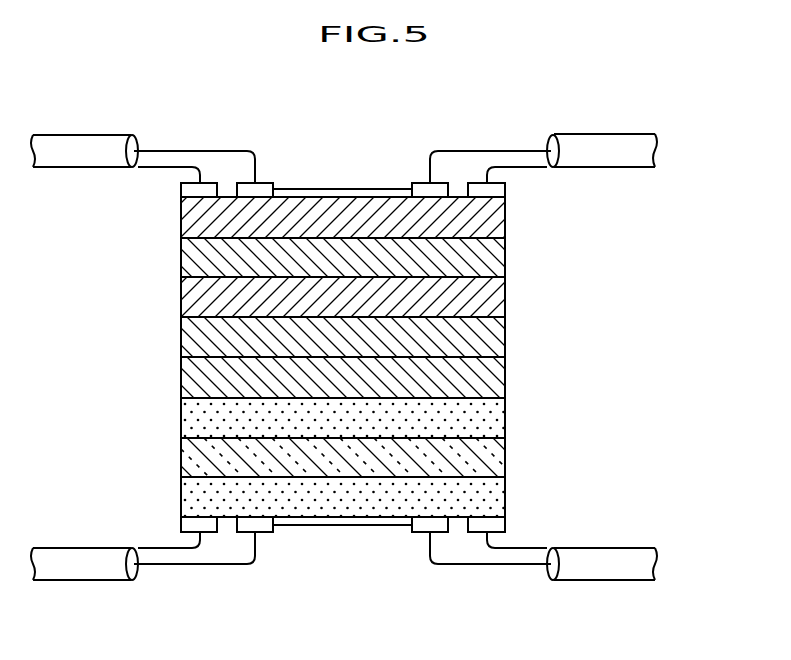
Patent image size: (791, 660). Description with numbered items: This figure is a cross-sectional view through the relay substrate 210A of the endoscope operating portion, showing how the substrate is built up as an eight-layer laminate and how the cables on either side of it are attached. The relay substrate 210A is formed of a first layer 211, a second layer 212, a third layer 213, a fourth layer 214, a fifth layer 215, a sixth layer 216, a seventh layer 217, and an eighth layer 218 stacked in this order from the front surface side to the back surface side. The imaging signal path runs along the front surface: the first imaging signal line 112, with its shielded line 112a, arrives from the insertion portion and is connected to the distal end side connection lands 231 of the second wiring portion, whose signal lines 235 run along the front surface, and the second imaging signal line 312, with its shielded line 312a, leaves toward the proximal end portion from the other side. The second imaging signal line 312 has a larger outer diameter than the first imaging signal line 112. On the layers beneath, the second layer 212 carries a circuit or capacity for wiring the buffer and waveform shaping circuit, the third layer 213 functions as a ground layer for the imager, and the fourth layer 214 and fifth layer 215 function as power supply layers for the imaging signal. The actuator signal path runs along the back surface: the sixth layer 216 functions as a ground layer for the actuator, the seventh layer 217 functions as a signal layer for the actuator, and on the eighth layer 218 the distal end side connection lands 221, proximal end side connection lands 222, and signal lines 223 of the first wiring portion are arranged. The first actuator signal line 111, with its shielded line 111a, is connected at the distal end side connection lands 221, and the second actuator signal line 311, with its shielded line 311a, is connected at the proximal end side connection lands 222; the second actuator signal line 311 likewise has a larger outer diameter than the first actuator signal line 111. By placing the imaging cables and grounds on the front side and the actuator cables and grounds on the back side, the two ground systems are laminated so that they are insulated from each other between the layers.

The first actuator signal line 111 is at (205, 567).
The shielded line of the first actuator signal line 111a is at (162, 546).
The first imaging signal line 112 is at (91, 134).
The shielded line of the first imaging signal line 112a is at (158, 169).
The relay substrate 210A is at (602, 210).
The first layer 211 is at (505, 218).
The second layer 212 is at (505, 258).
The third layer 213 is at (505, 297).
The fourth layer 214 is at (505, 335).
The fifth layer 215 is at (505, 373).
The sixth layer 216 is at (505, 412).
The seventh layer 217 is at (505, 452).
The eighth layer 218 is at (505, 492).
The distal end side connection lands 221 is at (262, 533).
The proximal end side connection lands 222 is at (425, 533).
The signal lines 223 is at (345, 526).
The distal end side connection lands 231 is at (273, 182).
The signal lines 235 is at (343, 188).
The second actuator signal line 311 is at (502, 566).
The shielded line of the second actuator signal line 311a is at (535, 547).
The second imaging signal line 312 is at (500, 150).
The shielded line of the second imaging signal line 312a is at (532, 168).